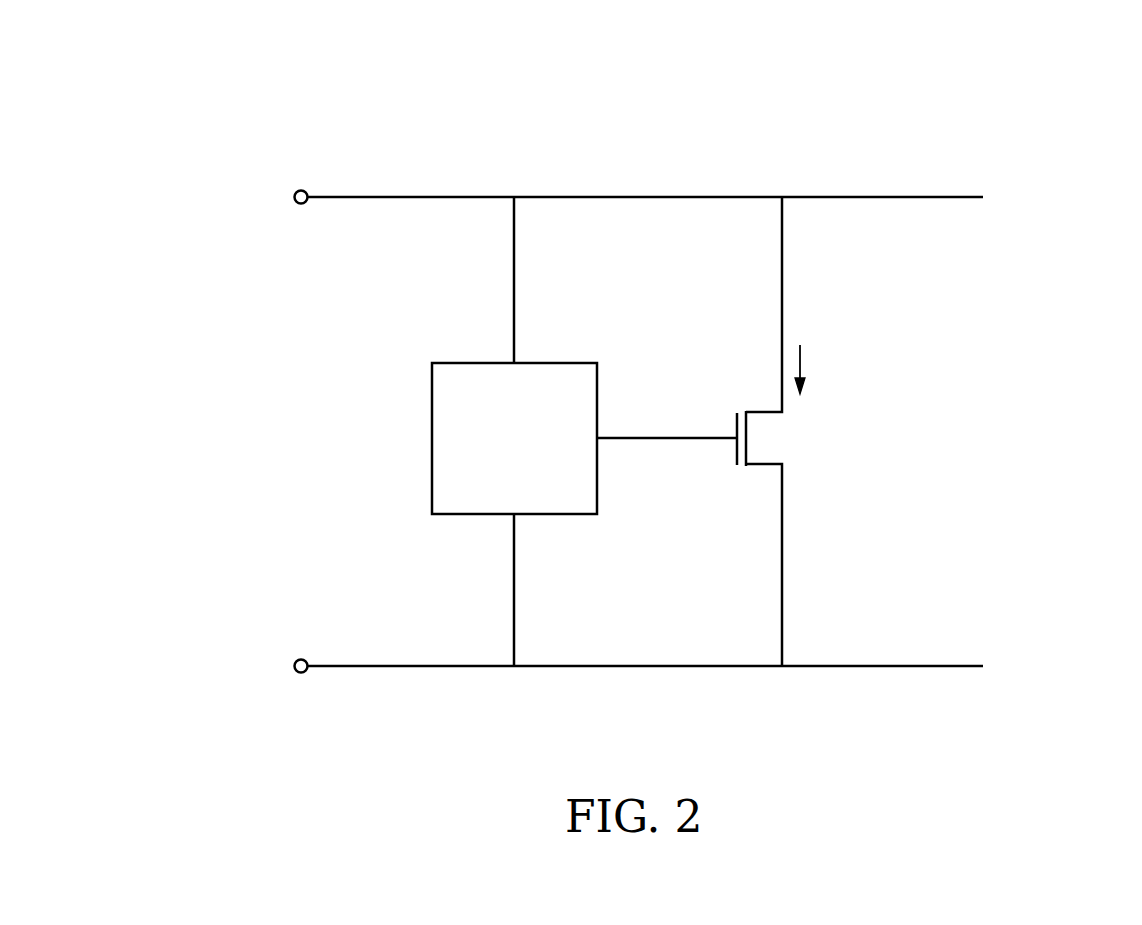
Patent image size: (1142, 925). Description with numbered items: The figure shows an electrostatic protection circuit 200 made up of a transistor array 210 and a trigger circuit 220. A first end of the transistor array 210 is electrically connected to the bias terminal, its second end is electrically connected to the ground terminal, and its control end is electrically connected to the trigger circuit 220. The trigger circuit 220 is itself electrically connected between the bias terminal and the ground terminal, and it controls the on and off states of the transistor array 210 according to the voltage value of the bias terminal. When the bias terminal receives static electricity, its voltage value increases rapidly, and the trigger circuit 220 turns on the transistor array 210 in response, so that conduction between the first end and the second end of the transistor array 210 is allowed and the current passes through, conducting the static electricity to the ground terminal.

The electrostatic protection circuit 200 is at (1012, 130).
The transistor array 210 is at (750, 397).
The trigger circuit 220 is at (432, 437).